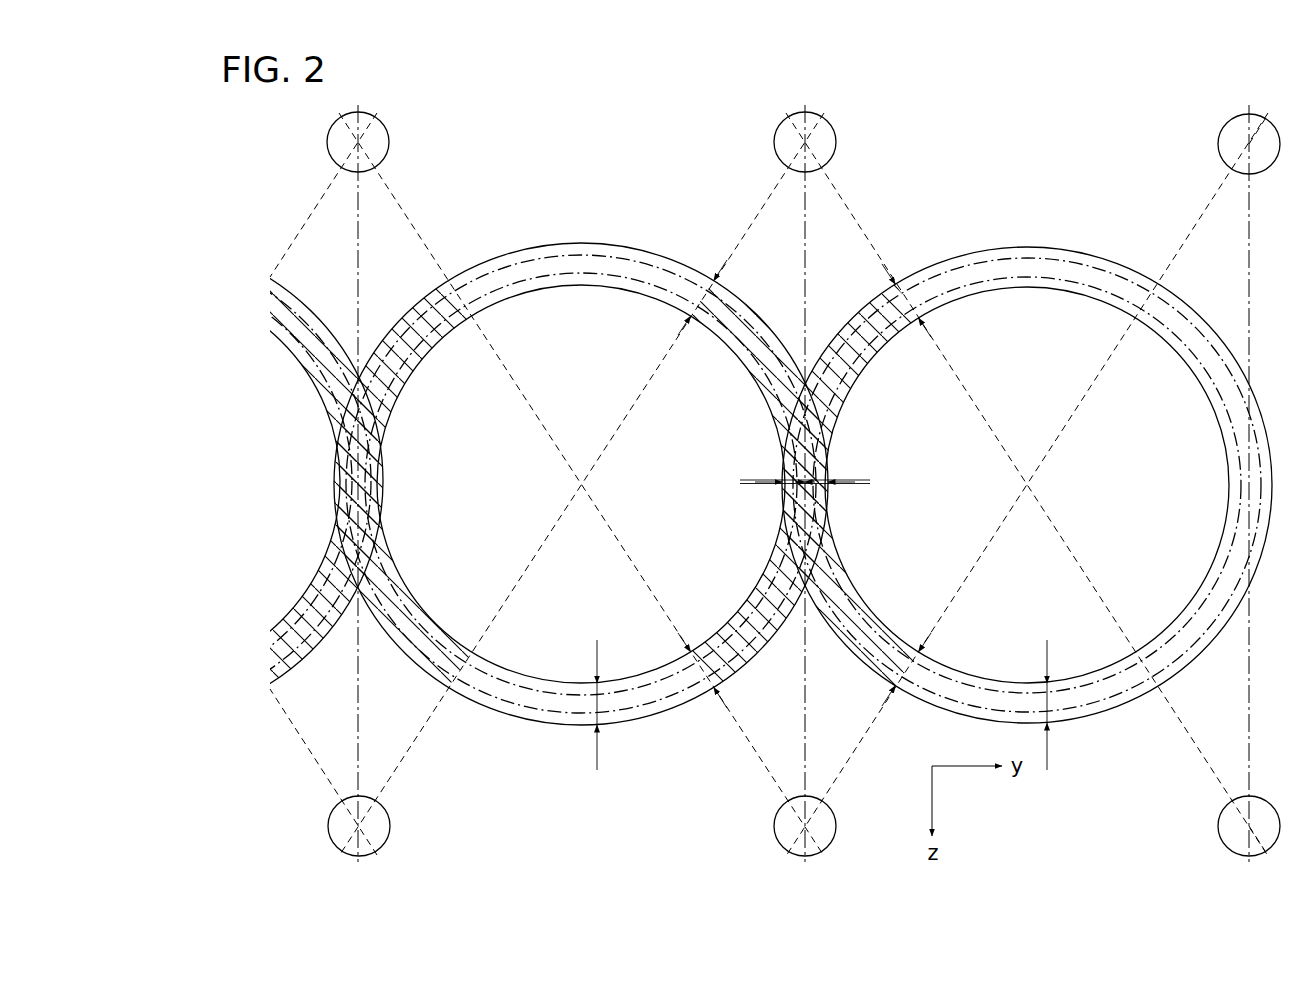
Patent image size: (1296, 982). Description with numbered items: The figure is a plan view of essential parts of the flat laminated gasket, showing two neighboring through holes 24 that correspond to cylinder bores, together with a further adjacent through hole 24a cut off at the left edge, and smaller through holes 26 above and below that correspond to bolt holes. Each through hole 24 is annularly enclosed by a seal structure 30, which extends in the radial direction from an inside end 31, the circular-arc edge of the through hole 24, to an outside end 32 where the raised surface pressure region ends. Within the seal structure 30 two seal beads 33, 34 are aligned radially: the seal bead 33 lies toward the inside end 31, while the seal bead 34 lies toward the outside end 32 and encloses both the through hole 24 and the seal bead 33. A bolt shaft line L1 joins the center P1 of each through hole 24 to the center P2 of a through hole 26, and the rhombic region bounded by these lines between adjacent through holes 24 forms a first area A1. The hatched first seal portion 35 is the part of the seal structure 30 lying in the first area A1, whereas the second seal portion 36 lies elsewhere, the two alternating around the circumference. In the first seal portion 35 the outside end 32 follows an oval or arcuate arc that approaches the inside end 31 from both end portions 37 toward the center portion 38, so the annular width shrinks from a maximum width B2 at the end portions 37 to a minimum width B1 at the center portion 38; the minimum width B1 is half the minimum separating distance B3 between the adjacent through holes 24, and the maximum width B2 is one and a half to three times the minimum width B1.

The through hole 24 is at (803, 484).
The adjacent tube 24a is at (316, 491).
The through hole 26 is at (327, 142).
The seal structure 30 is at (640, 250).
The inside end 31 is at (752, 383).
The outside end 32 is at (768, 338).
The seal bead 33 is at (548, 288).
The seal bead 34 is at (552, 257).
The first seal portion 35 is at (432, 304).
The second seal portion 36 is at (583, 272).
The end portion 37 is at (712, 280).
The center portion 38 is at (790, 462).
The center of the through hole 24 P1 is at (802, 521).
The center of the through hole 26 P2 is at (358, 146).
The first area A1 is at (803, 483).
The bolt shaft line L1 is at (412, 226).
The minimum width B1 is at (805, 495).
The maximum width B2 is at (835, 515).
The minimum separating distance B3 is at (833, 469).